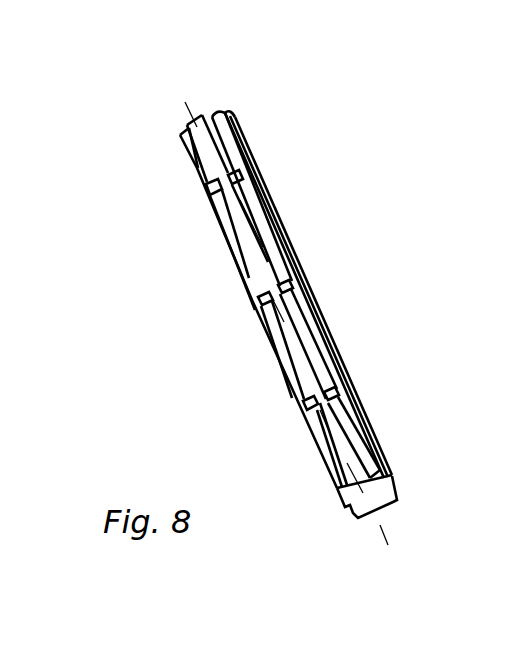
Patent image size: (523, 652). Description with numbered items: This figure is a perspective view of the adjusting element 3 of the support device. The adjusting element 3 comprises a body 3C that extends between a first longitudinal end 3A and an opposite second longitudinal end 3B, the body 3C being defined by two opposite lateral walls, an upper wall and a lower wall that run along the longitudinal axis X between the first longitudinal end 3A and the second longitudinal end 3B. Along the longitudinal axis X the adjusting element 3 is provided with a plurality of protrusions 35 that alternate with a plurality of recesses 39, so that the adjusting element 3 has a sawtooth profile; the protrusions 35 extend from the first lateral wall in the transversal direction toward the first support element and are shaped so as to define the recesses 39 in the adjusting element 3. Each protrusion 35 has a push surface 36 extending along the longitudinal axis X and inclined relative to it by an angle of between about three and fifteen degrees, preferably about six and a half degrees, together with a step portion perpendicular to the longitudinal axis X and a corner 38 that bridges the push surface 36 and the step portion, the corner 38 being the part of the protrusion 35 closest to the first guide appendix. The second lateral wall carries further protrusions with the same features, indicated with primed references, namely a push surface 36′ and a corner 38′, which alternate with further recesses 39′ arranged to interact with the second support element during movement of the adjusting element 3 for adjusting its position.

The adjusting element 3 is at (294, 152).
The first longitudinal end 3A is at (190, 88).
The second longitudinal end 3B is at (395, 532).
The body 3C is at (215, 322).
The longitudinal axis X is at (188, 110).
The protrusions 35 is at (280, 228).
The push surface 36 is at (283, 262).
The push surface of further protrusion 36′ is at (247, 277).
The corner 38 is at (293, 288).
The corner of further protrusion 38′ is at (266, 305).
The recesses 39 is at (305, 313).
The further recesses 39′ is at (258, 335).